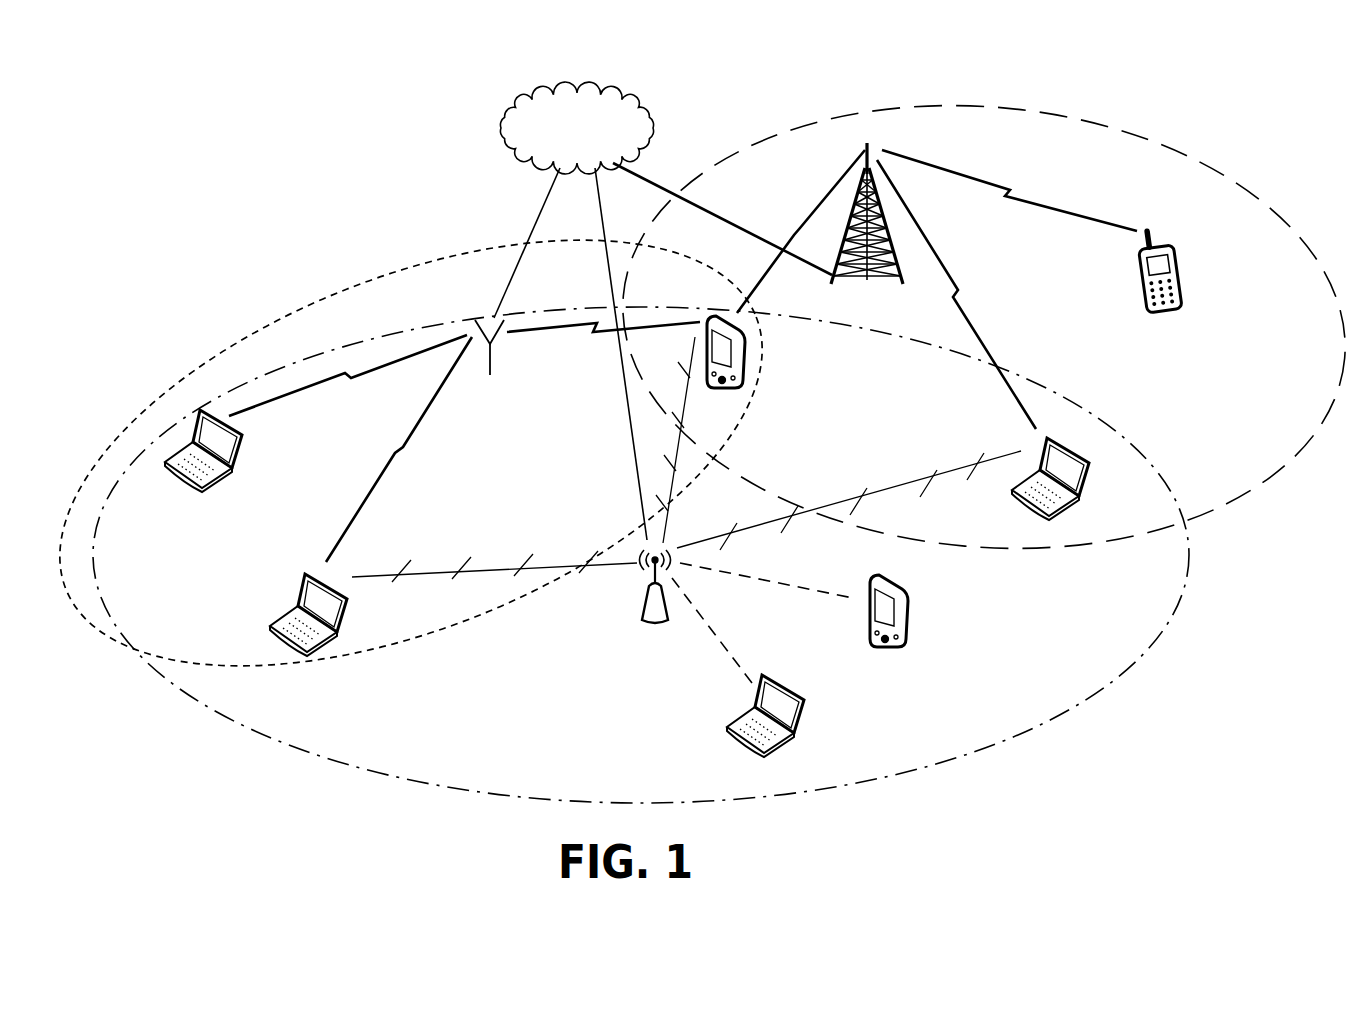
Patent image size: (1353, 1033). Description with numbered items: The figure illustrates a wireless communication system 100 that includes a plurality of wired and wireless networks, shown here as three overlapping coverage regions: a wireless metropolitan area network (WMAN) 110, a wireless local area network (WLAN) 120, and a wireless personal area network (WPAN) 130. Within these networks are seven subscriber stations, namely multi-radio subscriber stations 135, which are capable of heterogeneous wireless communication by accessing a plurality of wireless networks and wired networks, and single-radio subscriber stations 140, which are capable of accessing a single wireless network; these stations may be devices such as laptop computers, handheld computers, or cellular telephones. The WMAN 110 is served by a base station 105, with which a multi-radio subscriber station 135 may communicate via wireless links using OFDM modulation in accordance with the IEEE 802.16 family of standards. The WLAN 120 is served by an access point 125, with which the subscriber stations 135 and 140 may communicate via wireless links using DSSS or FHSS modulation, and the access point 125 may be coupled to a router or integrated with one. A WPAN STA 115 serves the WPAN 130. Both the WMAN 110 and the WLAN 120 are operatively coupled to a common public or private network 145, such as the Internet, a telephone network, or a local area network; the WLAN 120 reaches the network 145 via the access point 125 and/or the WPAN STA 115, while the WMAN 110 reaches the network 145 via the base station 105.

The wireless communication system 100 is at (328, 133).
The base station 105 is at (937, 286).
The wireless metropolitan area network (WMAN) 110 is at (1122, 134).
The WPAN STA 115 is at (464, 441).
The wireless local area network (WLAN) 120 is at (1107, 682).
The access point 125 is at (686, 510).
The wireless personal area network (WPAN) 130 is at (343, 293).
The multi-radio subscriber station 135 is at (656, 486).
The single-radio subscriber station 140 is at (702, 509).
The common public or private network 145 is at (558, 140).